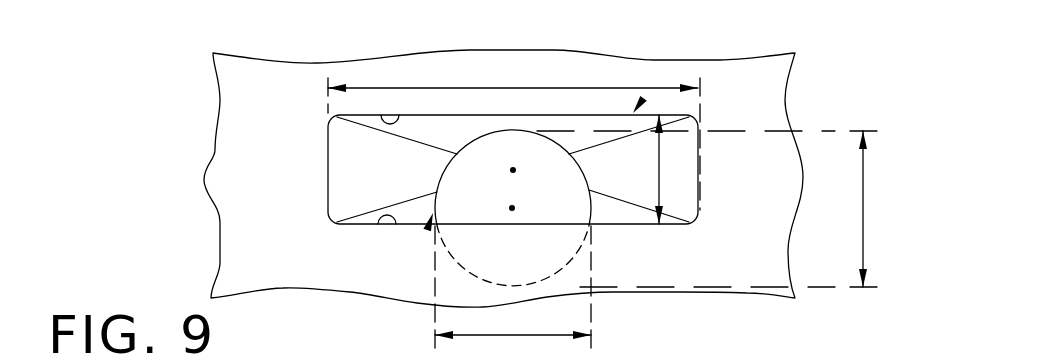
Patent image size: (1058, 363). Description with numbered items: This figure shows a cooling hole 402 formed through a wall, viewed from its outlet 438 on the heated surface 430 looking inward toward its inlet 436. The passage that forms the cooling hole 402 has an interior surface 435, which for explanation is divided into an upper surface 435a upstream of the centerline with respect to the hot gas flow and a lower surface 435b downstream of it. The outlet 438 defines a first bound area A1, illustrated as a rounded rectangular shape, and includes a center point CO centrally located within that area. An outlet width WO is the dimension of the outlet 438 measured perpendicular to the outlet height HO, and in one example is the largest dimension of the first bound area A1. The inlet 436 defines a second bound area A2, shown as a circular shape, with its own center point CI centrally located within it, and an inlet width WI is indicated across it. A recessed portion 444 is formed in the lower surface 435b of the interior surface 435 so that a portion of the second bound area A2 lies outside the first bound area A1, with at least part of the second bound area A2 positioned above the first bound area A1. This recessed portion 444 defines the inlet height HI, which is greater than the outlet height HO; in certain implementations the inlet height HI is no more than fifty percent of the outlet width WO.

The heated surface 430 is at (755, 85).
The interior surface 435 is at (400, 185).
The upper surface 435a is at (378, 113).
The lower surface 435b is at (382, 214).
The inlet 436 is at (502, 130).
The recessed portion 444 is at (513, 265).
The outlet 438 is at (608, 226).
The cooling hole 402 is at (675, 183).
The center point of the outlet CO is at (509, 170).
The center point of the inlet CI is at (516, 208).
The outlet width WO is at (467, 88).
The outlet height HO is at (657, 169).
The inlet height HI is at (865, 217).
The inlet width WI is at (497, 337).
The first bound area A1 is at (633, 113).
The second bound area A2 is at (433, 213).